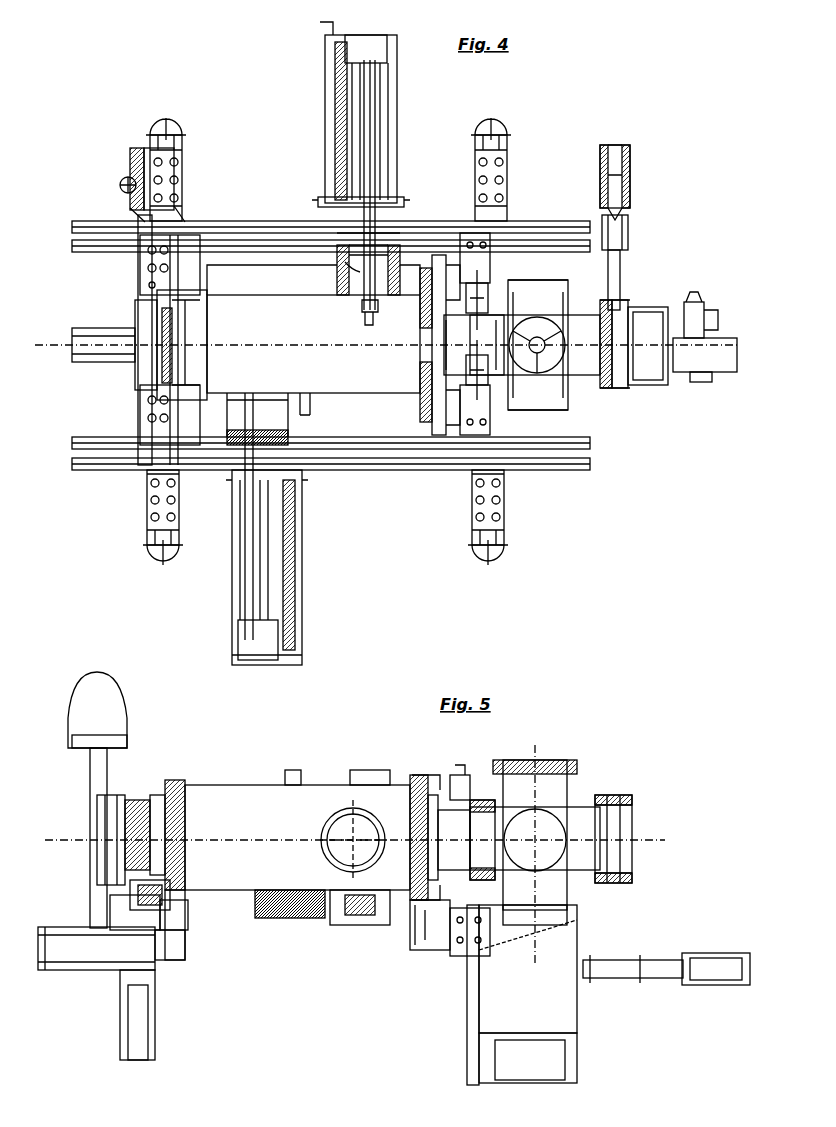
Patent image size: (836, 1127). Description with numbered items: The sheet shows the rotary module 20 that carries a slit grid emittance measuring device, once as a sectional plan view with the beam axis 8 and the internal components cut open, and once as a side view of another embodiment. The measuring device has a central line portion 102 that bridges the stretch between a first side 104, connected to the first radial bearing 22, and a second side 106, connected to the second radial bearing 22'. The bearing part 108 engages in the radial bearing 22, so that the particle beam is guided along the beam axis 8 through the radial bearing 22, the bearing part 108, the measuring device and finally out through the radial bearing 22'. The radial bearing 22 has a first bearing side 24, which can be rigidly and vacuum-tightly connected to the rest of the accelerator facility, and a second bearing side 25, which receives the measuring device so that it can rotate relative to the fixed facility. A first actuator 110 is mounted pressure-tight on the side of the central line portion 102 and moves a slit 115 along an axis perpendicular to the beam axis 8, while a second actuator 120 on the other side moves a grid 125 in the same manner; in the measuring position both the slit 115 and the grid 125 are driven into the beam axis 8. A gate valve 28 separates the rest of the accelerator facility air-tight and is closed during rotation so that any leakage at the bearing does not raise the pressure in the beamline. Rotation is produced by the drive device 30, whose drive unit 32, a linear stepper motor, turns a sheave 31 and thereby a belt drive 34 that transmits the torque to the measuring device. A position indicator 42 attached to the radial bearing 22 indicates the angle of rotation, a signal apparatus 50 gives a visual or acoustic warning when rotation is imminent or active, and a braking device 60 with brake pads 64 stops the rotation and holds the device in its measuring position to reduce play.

In FIG. 4, the beam axis 8 is at (66, 325).
In FIG. 5, the beam axis 8 is at (66, 828).
In FIG. 4, the rotary module 20 is at (125, 492).
In FIG. 4, the radial bearing 22 is at (142, 353).
In FIG. 5, the radial bearing 22 is at (108, 853).
In FIG. 4, the radial bearing 22' is at (455, 365).
In FIG. 5, the first bearing side 24 is at (97, 850).
In FIG. 5, the second bearing side 25 is at (632, 835).
In FIG. 4, the gate valve 28 is at (612, 148).
In FIG. 5, the gate valve 28 is at (678, 955).
In FIG. 5, the drive device 30 is at (185, 995).
In FIG. 5, the sheave 31 is at (188, 920).
In FIG. 5, the drive unit 32 is at (110, 955).
In FIG. 5, the belt drive 34 is at (180, 925).
In FIG. 5, the position indicator 42 is at (172, 780).
In FIG. 5, the signal apparatus 50 is at (70, 672).
In FIG. 4, the braking device 60 is at (420, 300).
In FIG. 5, the brake pads 64 is at (410, 950).
In FIG. 4, the central line portion 102 is at (380, 440).
In FIG. 5, the central line portion 102 is at (278, 785).
In FIG. 4, the first side 104 is at (212, 240).
In FIG. 5, the first side 104 is at (205, 920).
In FIG. 4, the second side 106 is at (445, 440).
In FIG. 5, the second side 106 is at (412, 775).
In FIG. 4, the bearing part 108 is at (172, 262).
In FIG. 5, the bearing part 108 is at (160, 800).
In FIG. 4, the first actuator 110 is at (235, 585).
In FIG. 4, the slit 115 is at (300, 438).
In FIG. 4, the second actuator 120 is at (405, 128).
In FIG. 4, the grid 125 is at (370, 300).